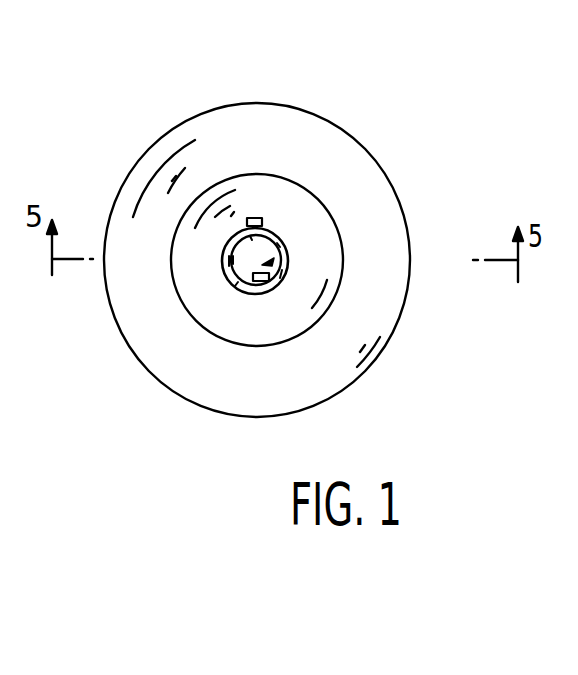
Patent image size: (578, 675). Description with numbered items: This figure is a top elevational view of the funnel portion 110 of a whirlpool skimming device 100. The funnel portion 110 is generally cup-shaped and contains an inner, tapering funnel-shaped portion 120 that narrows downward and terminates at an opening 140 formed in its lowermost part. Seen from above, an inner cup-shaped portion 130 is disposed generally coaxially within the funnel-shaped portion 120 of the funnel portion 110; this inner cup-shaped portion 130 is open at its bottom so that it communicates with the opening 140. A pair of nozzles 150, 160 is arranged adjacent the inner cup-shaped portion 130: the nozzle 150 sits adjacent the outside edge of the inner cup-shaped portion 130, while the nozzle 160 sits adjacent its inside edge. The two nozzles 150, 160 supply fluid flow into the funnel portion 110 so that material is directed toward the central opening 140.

The whirlpool skimming device 100 is at (205, 90).
The funnel portion 110 is at (330, 122).
The inner, tapering funnel-shaped portion 120 is at (313, 193).
The inner cup-shaped portion 130 is at (282, 246).
The opening 140 is at (272, 262).
The nozzle 150 is at (258, 218).
The nozzle 160 is at (269, 281).